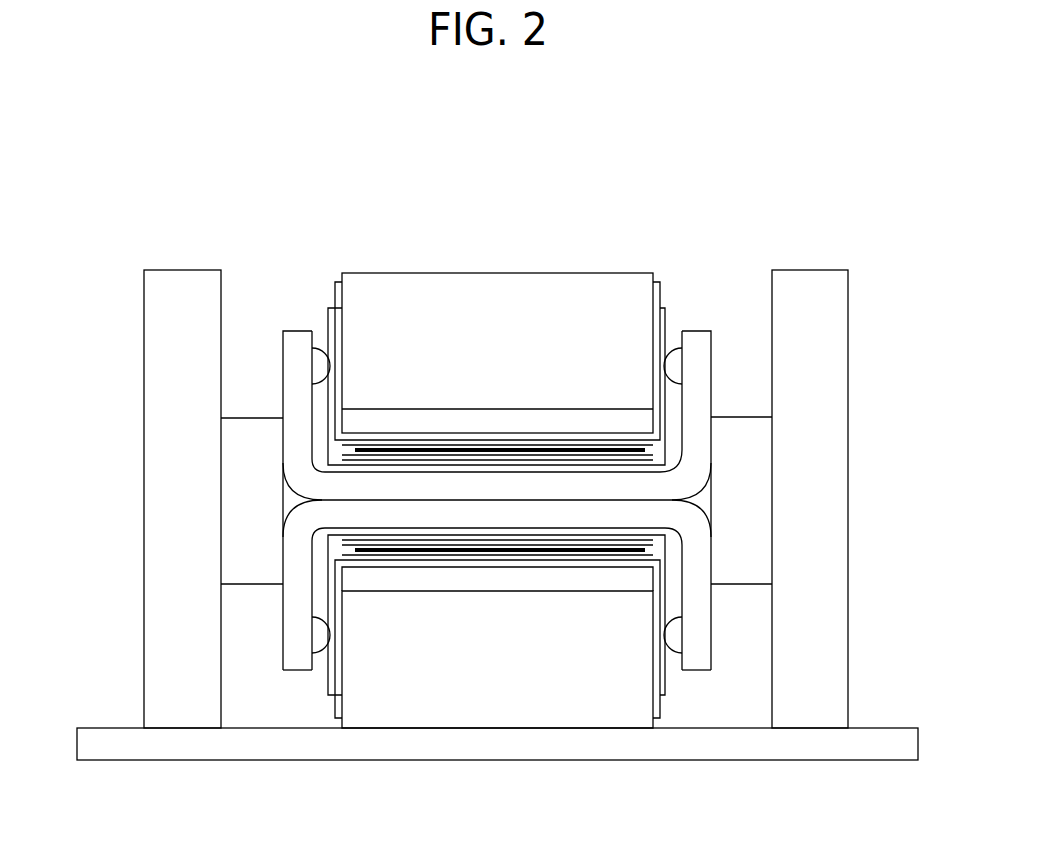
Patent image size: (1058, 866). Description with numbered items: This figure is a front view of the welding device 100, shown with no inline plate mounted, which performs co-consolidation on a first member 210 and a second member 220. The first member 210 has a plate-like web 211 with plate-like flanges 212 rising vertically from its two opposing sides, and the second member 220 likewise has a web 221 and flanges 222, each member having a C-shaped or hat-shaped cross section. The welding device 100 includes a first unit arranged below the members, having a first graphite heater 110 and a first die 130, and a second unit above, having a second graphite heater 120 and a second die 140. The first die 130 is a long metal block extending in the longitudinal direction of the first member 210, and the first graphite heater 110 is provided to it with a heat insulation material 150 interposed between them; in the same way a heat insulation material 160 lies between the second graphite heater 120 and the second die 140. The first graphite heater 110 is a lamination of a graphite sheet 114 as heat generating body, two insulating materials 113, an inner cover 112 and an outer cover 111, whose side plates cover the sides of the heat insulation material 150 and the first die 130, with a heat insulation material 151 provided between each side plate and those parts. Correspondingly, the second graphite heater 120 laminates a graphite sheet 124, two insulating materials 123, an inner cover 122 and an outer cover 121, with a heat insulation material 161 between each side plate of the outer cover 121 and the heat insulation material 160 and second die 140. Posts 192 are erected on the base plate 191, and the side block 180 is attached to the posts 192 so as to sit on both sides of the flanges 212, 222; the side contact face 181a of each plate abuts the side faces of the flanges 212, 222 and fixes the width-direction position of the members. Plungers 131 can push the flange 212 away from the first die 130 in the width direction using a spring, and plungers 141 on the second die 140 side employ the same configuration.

The welding device 100 is at (490, 218).
The first graphite heater 110 is at (406, 609).
The outer cover 111 is at (416, 540).
The inner cover 112 is at (578, 563).
The insulating materials 113 is at (457, 545).
The graphite sheet 114 is at (498, 540).
The second graphite heater 120 is at (406, 393).
The outer cover 121 is at (416, 462).
The inner cover 122 is at (578, 437).
The insulating materials 123 is at (457, 460).
The graphite sheet 124 is at (498, 460).
The first die 130 is at (511, 712).
The plunger 131 is at (312, 635).
The second die 140 is at (537, 273).
The plunger 141 is at (312, 366).
The heat insulation material 150 is at (622, 582).
The heat insulation material 151 is at (342, 697).
The heat insulation material 160 is at (622, 418).
The heat insulation material 161 is at (342, 302).
The side block 180 is at (496, 501).
The side contact face 181a is at (283, 490).
The base plate 191 is at (863, 762).
The posts 192 is at (144, 318).
The first member 210 is at (724, 550).
The web 211 is at (374, 513).
The flanges 212 is at (298, 670).
The second member 220 is at (724, 450).
The web 221 is at (374, 490).
The flanges 222 is at (298, 331).